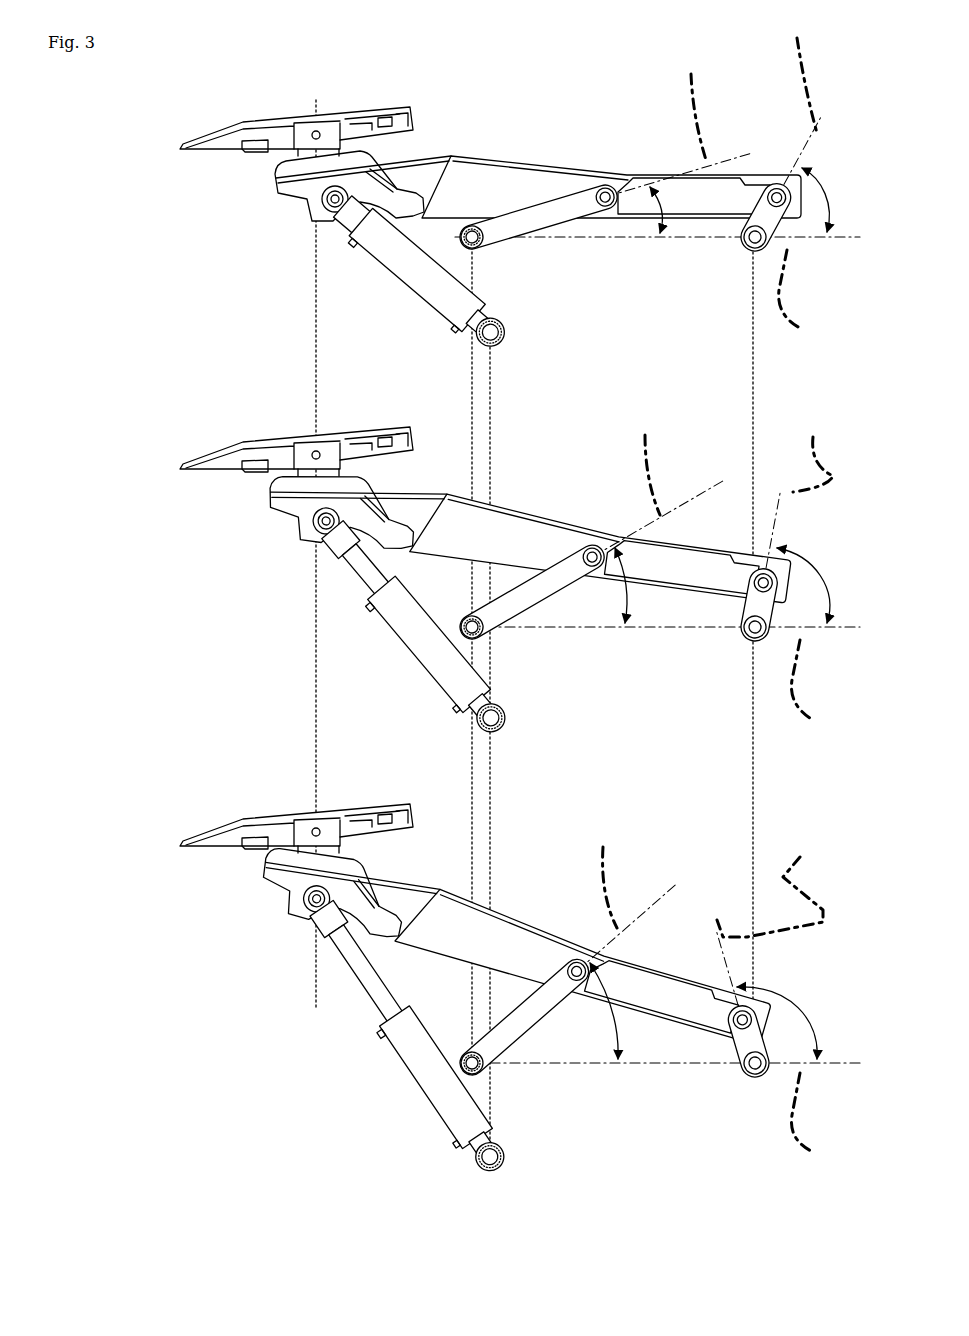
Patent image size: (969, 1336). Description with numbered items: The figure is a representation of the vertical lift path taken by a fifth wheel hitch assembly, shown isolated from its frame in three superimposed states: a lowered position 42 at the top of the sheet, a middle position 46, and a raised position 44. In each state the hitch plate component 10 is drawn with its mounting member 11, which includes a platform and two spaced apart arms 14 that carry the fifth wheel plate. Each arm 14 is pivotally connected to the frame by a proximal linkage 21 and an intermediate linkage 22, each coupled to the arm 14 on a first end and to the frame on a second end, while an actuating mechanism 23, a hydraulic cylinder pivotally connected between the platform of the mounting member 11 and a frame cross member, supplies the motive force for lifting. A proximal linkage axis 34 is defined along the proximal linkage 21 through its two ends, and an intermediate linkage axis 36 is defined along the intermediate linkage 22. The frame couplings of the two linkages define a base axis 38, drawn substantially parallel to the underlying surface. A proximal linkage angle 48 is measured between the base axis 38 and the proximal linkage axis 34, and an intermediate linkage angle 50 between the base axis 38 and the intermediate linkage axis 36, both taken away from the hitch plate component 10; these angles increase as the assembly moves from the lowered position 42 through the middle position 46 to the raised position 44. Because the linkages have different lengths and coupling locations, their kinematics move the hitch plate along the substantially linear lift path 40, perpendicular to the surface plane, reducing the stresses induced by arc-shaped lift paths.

The hitch plate component 10 is at (350, 108).
The mounting member 11 is at (538, 141).
The arms 14 is at (458, 188).
The proximal linkage 21 is at (777, 227).
The intermediate linkage 22 is at (548, 228).
The actuating mechanism 23 is at (383, 265).
The proximal linkage axis 34 is at (775, 477).
The intermediate linkage axis 36 is at (648, 490).
The base axis 38 is at (810, 710).
The lift path 40 is at (314, 700).
The lowered position 42 is at (205, 92).
The raised position 44 is at (205, 788).
The middle position 46 is at (205, 408).
The proximal linkage angle 48 is at (823, 196).
The intermediate linkage angle 50 is at (655, 205).